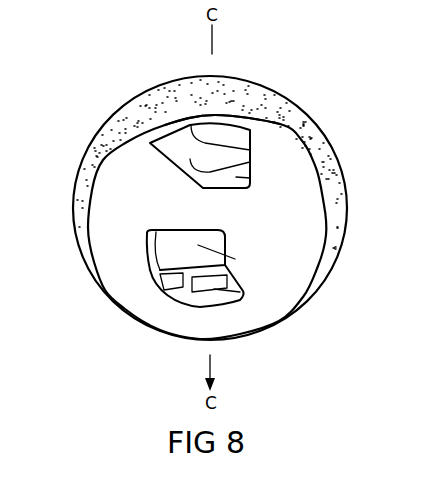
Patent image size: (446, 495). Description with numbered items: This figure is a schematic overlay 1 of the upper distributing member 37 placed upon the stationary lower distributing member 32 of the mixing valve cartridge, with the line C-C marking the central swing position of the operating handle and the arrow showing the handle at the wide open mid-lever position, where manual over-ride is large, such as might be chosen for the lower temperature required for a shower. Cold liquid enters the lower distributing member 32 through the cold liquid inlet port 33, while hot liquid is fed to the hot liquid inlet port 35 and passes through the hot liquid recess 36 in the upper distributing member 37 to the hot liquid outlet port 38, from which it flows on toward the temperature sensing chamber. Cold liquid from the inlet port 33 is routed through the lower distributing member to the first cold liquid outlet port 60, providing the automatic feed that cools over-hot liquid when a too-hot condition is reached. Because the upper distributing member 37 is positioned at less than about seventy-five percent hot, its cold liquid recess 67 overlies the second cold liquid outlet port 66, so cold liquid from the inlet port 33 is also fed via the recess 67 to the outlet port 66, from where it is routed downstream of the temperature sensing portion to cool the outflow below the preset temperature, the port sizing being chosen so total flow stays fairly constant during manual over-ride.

The device 1 is at (302, 105).
The lower distributing member 32 is at (260, 116).
The cold liquid inlet port 33 is at (235, 259).
The hot liquid inlet port 35 is at (250, 184).
The hot liquid recess 36 is at (250, 133).
The upper distributing member 37 is at (209, 112).
The hot liquid outlet port 38 is at (236, 140).
The first cold liquid outlet port 60 is at (160, 274).
The second cold liquid outlet port 66 is at (242, 297).
The cold liquid recess 67 is at (168, 230).